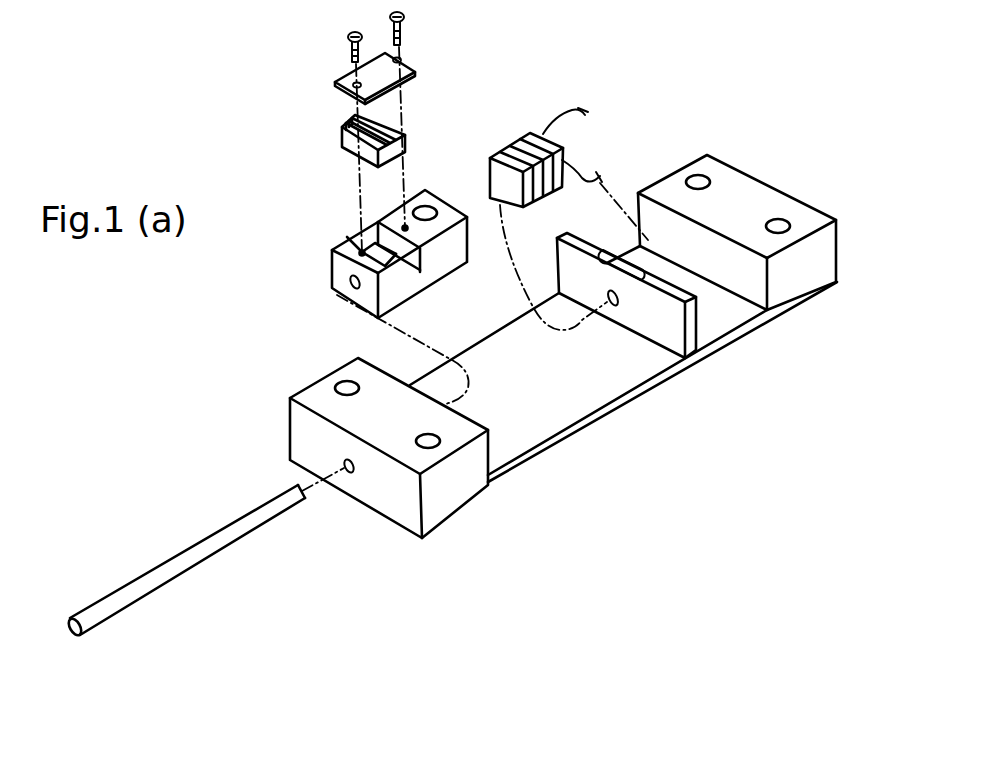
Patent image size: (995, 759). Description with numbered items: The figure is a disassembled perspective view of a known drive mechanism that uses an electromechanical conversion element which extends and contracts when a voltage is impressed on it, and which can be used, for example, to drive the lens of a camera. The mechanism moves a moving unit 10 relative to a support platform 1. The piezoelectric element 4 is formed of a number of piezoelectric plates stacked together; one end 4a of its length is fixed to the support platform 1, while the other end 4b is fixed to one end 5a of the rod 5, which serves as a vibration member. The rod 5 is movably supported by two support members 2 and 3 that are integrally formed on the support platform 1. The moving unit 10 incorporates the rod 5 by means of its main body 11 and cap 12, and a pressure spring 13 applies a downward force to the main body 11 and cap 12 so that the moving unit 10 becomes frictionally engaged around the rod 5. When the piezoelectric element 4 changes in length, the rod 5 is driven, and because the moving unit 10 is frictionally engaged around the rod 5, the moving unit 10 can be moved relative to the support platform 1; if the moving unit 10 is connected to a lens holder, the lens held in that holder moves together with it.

The support platform 1 is at (667, 188).
The support member 2 is at (698, 325).
The support member 3 is at (477, 468).
The piezoelectric element 4 is at (543, 200).
The one end of the piezoelectric element 4a is at (566, 171).
The other end of the piezoelectric element 4b is at (502, 177).
The rod 5 is at (206, 542).
The one end of the rod 5a is at (306, 497).
The moving unit 10 is at (382, 207).
The main body 11 is at (433, 278).
The cap 12 is at (350, 150).
The pressure spring 13 is at (413, 64).